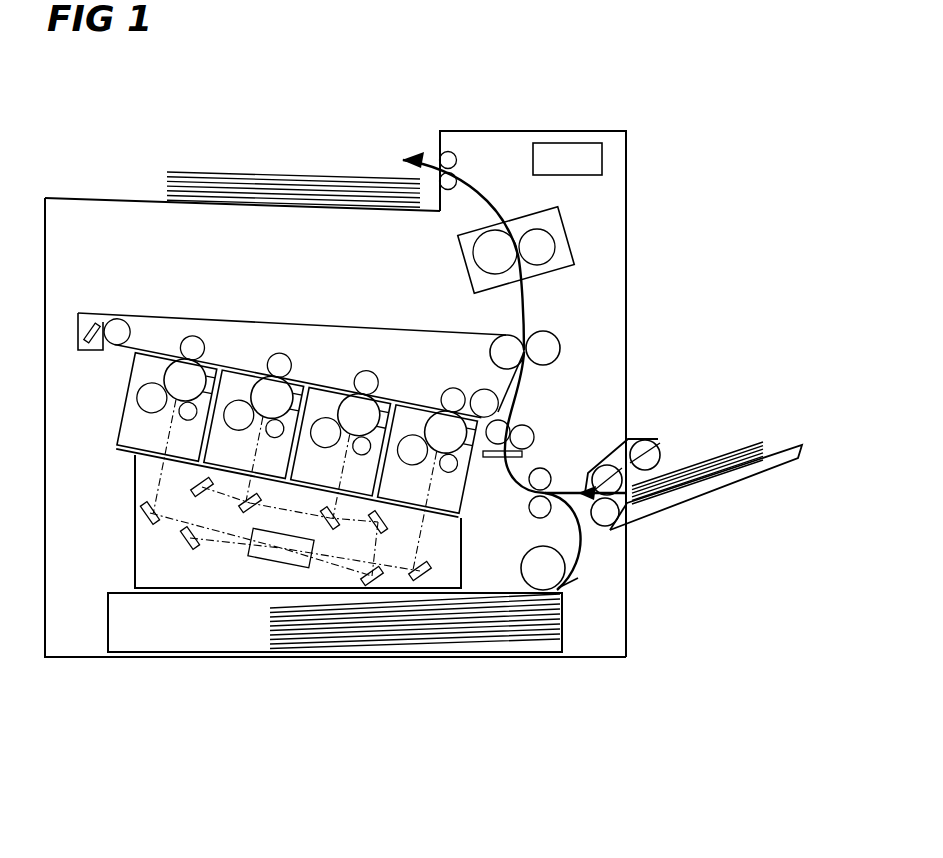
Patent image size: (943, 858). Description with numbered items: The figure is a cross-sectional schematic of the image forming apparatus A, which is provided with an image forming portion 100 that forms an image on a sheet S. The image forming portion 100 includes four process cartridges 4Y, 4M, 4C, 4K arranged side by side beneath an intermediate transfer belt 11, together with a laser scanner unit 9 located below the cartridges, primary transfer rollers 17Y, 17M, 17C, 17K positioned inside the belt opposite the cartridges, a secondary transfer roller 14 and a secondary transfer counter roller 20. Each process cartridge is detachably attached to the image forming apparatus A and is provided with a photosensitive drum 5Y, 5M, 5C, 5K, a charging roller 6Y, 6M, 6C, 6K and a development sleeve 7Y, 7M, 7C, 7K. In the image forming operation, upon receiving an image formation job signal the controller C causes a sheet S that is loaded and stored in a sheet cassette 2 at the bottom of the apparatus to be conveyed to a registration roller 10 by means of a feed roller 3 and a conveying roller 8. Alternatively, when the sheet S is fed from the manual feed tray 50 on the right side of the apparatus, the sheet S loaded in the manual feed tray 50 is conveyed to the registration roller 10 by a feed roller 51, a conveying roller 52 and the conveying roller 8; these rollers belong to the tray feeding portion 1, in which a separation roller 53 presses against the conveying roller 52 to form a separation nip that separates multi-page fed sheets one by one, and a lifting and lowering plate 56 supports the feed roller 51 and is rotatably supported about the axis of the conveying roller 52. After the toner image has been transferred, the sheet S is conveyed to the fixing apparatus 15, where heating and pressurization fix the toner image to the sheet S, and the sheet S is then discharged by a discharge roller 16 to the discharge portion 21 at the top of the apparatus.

The tray feeding portion 1 is at (753, 412).
The image forming apparatus A is at (660, 106).
The controller C is at (602, 157).
The sheet S is at (243, 176).
The sheet cassette 2 is at (190, 622).
The feed roller 3 is at (540, 584).
The conveying roller 8 is at (548, 476).
The laser scanner unit 9 is at (145, 548).
The registration roller 10 is at (534, 435).
The intermediate transfer belt 11 is at (243, 321).
The secondary transfer roller 14 is at (561, 347).
The fixing apparatus 15 is at (458, 246).
The discharge roller 16 is at (452, 157).
The secondary transfer counter roller 20 is at (497, 340).
The discharge portion 21 is at (118, 197).
The image forming portion 100 is at (148, 294).
The process cartridge 4Y is at (134, 356).
The process cartridge 4M is at (228, 373).
The process cartridge 4C is at (312, 388).
The process cartridge 4K is at (398, 404).
The photosensitive drum 5Y is at (188, 380).
The photosensitive drum 5M is at (275, 398).
The photosensitive drum 5C is at (362, 415).
The photosensitive drum 5K is at (449, 432).
The charging roller 6Y is at (188, 419).
The charging roller 6M is at (273, 439).
The charging roller 6C is at (360, 457).
The charging roller 6K is at (448, 474).
The development sleeve 7Y is at (150, 412).
The development sleeve 7M is at (238, 432).
The development sleeve 7C is at (326, 448).
The development sleeve 7K is at (412, 467).
The primary transfer roller 17Y is at (193, 336).
The primary transfer roller 17M is at (281, 353).
The primary transfer roller 17C is at (363, 371).
The primary transfer roller 17K is at (447, 390).
The manual feed tray 50 is at (727, 477).
The feed roller 51 is at (661, 452).
The conveying roller 52 is at (655, 493).
The separation roller 53 is at (605, 526).
The lifting and lowering plate 56 is at (637, 439).